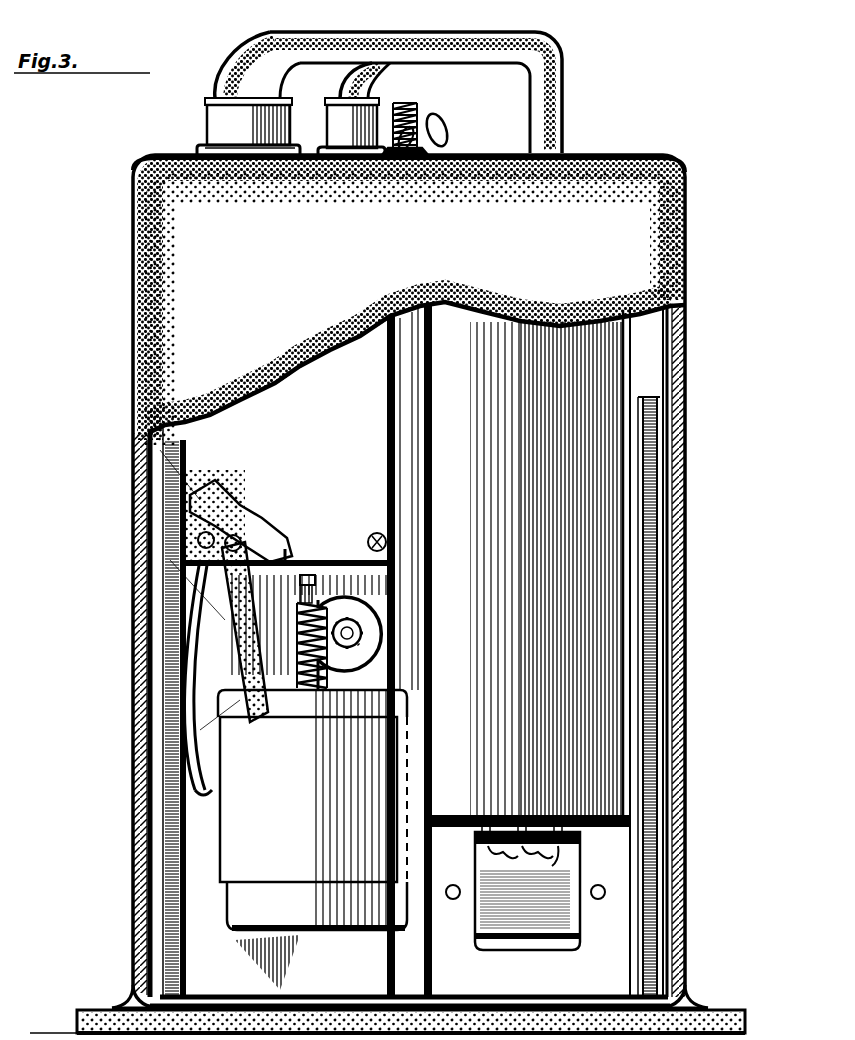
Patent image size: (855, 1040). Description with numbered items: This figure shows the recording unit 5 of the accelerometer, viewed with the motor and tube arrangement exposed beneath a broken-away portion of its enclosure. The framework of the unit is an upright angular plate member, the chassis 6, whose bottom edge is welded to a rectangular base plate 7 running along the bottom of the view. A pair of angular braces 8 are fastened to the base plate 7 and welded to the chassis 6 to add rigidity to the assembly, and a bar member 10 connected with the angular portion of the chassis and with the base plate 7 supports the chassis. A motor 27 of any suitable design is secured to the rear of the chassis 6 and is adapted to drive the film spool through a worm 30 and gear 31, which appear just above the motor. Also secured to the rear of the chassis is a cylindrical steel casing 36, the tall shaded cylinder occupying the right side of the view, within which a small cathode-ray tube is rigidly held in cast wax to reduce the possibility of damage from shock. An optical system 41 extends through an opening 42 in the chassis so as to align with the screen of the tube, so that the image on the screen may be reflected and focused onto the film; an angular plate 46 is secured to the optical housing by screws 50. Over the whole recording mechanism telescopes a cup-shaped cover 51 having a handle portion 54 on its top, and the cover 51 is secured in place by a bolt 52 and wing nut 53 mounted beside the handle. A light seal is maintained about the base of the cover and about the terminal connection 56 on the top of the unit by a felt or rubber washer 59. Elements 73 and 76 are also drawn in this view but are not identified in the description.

The recording unit 5 is at (690, 526).
The chassis 6 is at (362, 974).
The base plate 7 is at (80, 1009).
The angular braces 8 is at (190, 948).
The bar member 10 is at (432, 930).
The motor 27 is at (282, 793).
The worm 30 is at (297, 668).
The gear 31 is at (352, 616).
The cylindrical steel casing 36 is at (511, 636).
The optical system 41 is at (582, 866).
The opening 42 is at (485, 950).
The angular plate 46 is at (578, 944).
The screws 50 is at (528, 867).
The cover 51 is at (262, 304).
The bolt 52 is at (414, 108).
The wing nut 53 is at (446, 130).
The handle portion 54 is at (530, 90).
The terminal connection 56 is at (204, 118).
The washer 59 is at (716, 1008).
The pipe 73 is at (350, 84).
The cap 76 is at (327, 122).